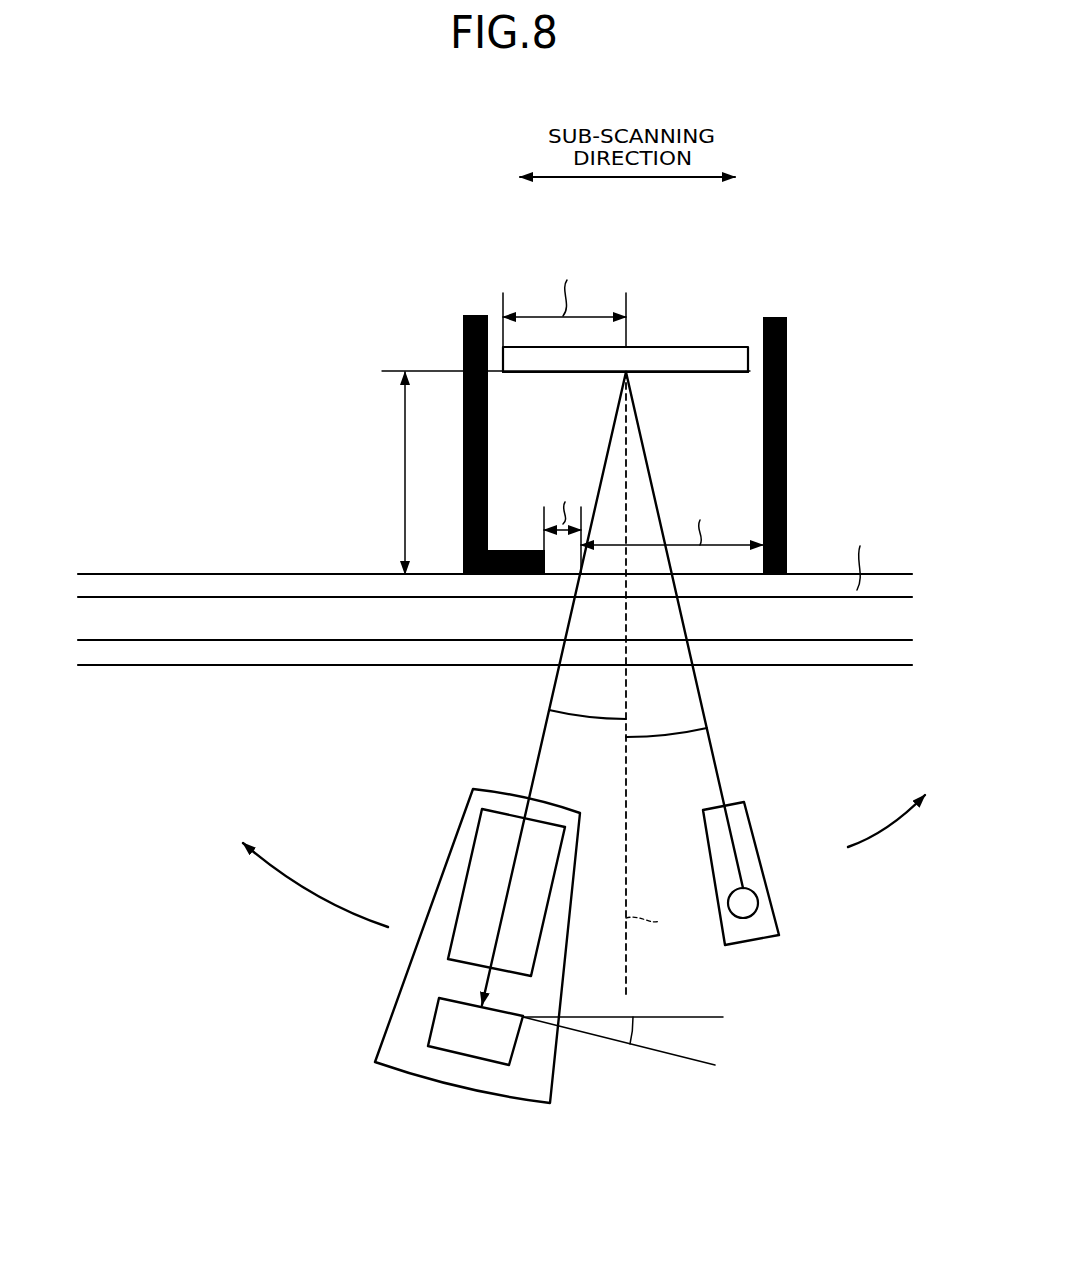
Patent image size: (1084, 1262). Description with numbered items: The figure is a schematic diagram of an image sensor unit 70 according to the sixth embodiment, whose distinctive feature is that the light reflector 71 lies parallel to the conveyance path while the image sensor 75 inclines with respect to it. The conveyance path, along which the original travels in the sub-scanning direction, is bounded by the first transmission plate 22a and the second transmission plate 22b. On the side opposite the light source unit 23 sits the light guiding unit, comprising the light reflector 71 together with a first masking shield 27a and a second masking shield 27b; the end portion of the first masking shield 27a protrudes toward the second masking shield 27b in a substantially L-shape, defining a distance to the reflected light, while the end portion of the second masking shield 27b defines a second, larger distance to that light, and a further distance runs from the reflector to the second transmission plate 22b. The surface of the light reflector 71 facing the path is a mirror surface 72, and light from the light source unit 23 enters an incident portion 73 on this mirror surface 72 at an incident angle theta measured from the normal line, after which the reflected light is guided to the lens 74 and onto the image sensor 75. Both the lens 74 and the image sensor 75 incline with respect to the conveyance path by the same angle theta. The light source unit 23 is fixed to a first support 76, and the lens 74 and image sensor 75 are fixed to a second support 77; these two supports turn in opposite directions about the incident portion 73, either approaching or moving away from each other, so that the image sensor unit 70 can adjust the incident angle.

The image sensor unit 70 is at (816, 130).
The first transmission plate 22a is at (237, 653).
The second transmission plate 22b is at (237, 583).
The first masking shield 27a is at (463, 340).
The second masking shield 27b is at (787, 340).
The light reflector 71 is at (686, 347).
The mirror surface 72 is at (706, 375).
The incident portion 73 is at (628, 373).
The lens 74 is at (468, 873).
The image sensor 75 is at (438, 1001).
The first support 76 is at (752, 827).
The second support 77 is at (470, 813).
The light source unit 23 is at (760, 900).